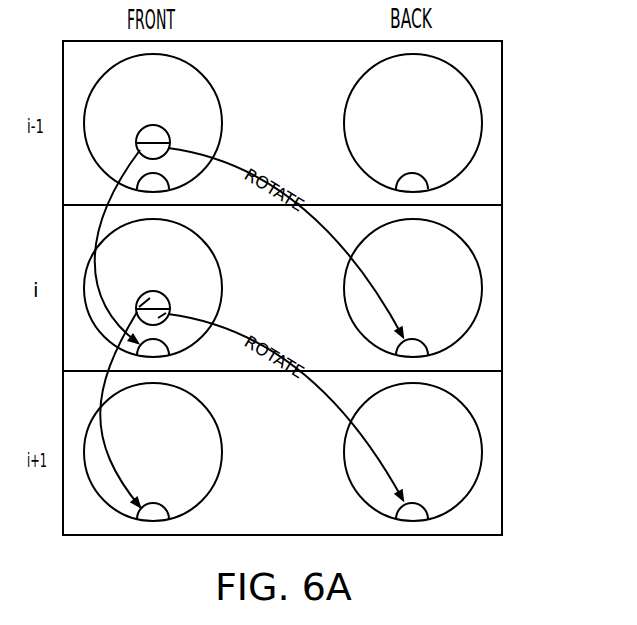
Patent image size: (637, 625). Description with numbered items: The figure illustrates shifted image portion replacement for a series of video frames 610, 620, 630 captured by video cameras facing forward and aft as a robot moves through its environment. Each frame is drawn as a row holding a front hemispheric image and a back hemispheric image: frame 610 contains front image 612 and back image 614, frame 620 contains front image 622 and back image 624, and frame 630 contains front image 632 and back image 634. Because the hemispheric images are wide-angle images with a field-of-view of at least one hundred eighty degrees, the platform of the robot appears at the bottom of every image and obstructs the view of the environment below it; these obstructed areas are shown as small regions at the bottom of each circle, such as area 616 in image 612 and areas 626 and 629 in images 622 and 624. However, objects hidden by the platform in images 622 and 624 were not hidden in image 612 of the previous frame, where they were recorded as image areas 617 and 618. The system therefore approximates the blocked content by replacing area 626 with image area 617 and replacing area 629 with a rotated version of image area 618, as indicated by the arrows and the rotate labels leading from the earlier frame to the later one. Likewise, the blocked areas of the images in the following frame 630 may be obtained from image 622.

The frame 610 is at (502, 120).
The frame 620 is at (502, 287).
The frame 630 is at (502, 450).
The image 612 is at (212, 82).
The back hemispheric image 614 is at (342, 127).
The obstructed image area 616 is at (160, 187).
The image area 617 is at (139, 143).
The image area 618 is at (165, 147).
The image 622 is at (212, 248).
The image 624 is at (342, 290).
The obstructed area 626 is at (160, 355).
The obstructed area 629 is at (413, 336).
The front hemispheric image 632 is at (213, 413).
The back hemispheric image 634 is at (343, 455).